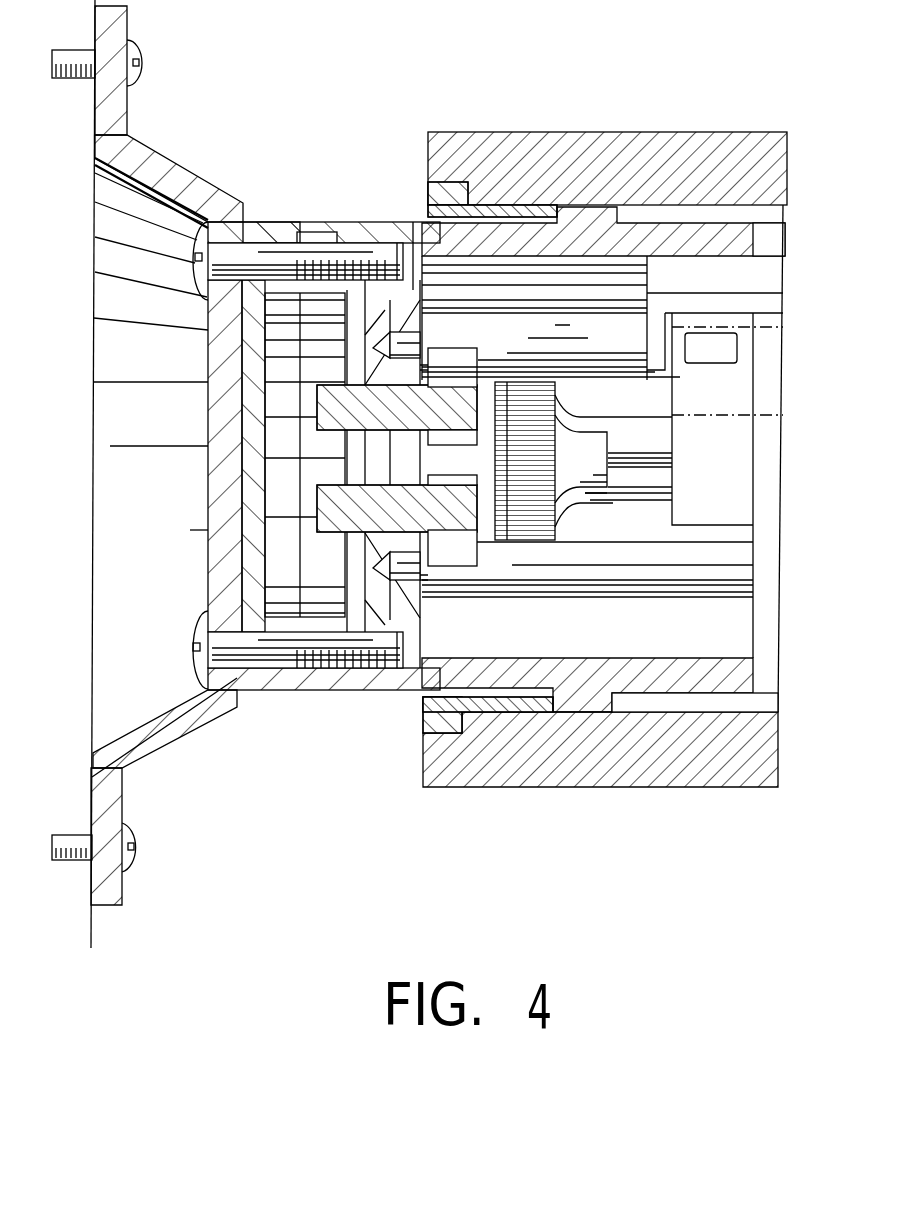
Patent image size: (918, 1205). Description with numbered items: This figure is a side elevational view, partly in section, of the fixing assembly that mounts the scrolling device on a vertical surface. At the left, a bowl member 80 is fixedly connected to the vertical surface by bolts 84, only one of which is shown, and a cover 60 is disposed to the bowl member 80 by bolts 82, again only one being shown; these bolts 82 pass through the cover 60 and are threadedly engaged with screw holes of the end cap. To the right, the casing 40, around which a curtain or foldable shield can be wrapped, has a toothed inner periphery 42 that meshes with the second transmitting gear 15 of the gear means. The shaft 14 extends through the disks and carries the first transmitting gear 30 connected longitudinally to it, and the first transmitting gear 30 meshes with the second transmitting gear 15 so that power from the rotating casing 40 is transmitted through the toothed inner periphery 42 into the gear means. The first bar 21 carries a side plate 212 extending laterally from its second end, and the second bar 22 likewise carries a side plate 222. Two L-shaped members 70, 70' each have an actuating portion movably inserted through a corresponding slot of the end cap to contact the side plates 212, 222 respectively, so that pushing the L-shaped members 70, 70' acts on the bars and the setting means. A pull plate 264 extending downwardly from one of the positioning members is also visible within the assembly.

The shaft 14 is at (652, 458).
The second transmitting gear 15 is at (505, 382).
The first bar 21 is at (640, 578).
The second bar 22 is at (610, 327).
The first transmitting gear 30 is at (533, 503).
The casing 40 is at (563, 150).
The toothed inner periphery 42 is at (450, 177).
The cover 60 is at (290, 233).
The L-shaped member 70 is at (397, 621).
The L-shaped member 70' is at (397, 274).
The bowl member 80 is at (197, 180).
The bolts 82 is at (259, 253).
The bolts 84 is at (140, 58).
The side plate 212 is at (455, 550).
The side plate 222 is at (448, 358).
The pull plate 264 is at (768, 535).